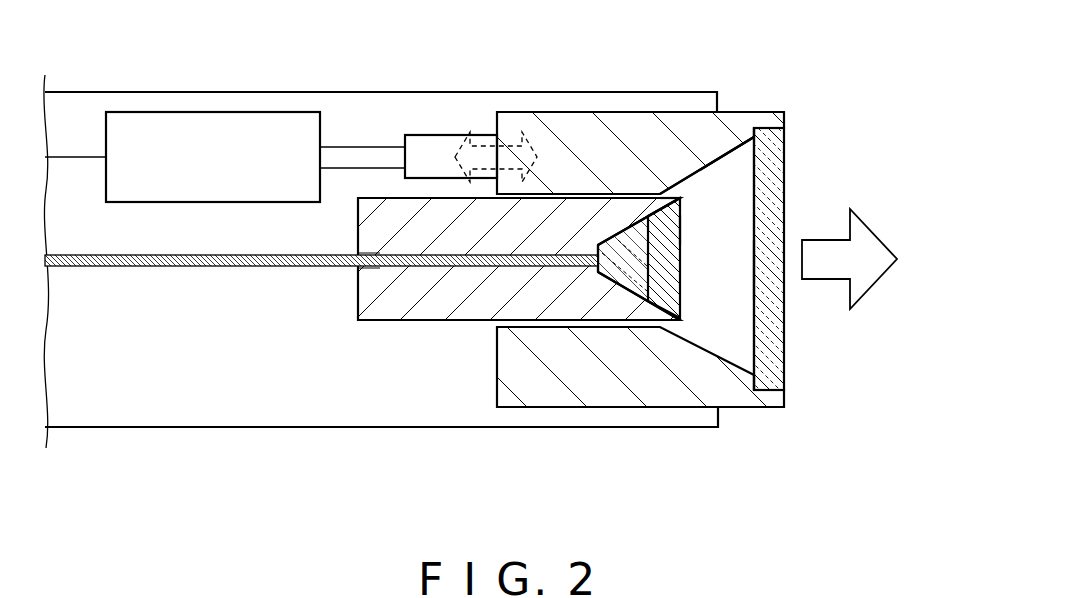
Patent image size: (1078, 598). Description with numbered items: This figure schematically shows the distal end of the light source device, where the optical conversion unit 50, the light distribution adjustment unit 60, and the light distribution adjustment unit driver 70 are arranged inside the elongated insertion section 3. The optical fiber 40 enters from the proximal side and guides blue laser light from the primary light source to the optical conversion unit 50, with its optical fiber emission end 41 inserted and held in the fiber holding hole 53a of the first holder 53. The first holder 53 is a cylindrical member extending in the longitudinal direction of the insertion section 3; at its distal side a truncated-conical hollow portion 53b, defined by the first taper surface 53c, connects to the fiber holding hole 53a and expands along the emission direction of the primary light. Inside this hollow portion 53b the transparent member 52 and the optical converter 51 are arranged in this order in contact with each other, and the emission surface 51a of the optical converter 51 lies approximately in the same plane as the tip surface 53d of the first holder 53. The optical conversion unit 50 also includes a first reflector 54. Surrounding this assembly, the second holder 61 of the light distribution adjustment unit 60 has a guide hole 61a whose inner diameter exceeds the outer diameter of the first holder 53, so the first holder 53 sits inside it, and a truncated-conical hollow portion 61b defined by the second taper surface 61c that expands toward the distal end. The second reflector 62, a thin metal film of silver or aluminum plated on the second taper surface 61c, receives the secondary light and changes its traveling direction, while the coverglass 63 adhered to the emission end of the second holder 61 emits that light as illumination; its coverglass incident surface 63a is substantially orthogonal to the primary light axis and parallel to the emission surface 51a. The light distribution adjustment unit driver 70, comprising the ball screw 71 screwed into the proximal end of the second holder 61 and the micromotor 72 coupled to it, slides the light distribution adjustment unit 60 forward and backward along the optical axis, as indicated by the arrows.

The insertion section 3 is at (91, 92).
The optical fiber 40 is at (97, 267).
The optical fiber emission end 41 is at (595, 268).
The optical conversion unit 50 is at (687, 477).
The optical converter 51 is at (663, 298).
The emission surface 51a is at (682, 230).
The transparent member 52 is at (622, 283).
The first holder 53 is at (495, 293).
The fiber holding hole 53a is at (375, 265).
The hollow portion 53b is at (682, 195).
The first taper surface 53c is at (681, 321).
The tip surface 53d is at (682, 203).
The first reflector 54 is at (600, 272).
The light distribution adjustment unit 60 is at (792, 45).
The second holder 61 is at (538, 122).
The guide hole 61a is at (626, 193).
The hollow portion 61b is at (740, 314).
The second taper surface 61c is at (738, 146).
The second reflector 62 is at (693, 171).
The coverglass 63 is at (777, 140).
The coverglass incident surface 63a is at (754, 272).
The light distribution adjustment unit driver 70 is at (437, 45).
The ball screw 71 is at (418, 135).
The micromotor 72 is at (291, 113).